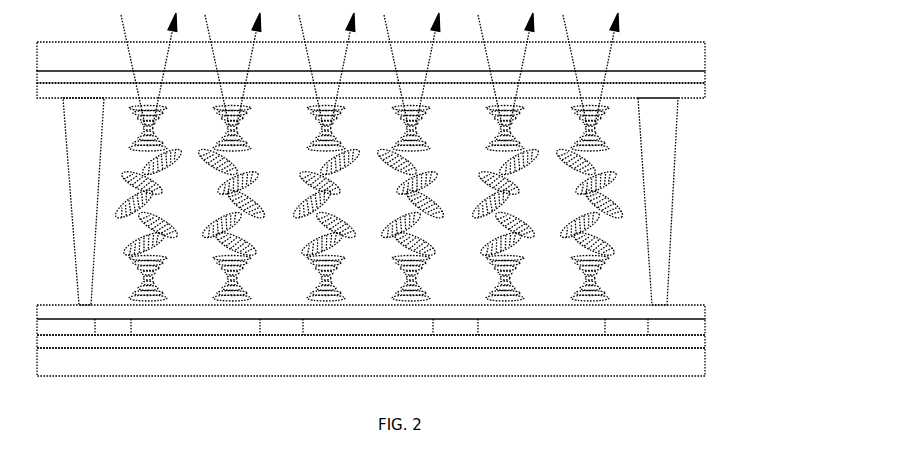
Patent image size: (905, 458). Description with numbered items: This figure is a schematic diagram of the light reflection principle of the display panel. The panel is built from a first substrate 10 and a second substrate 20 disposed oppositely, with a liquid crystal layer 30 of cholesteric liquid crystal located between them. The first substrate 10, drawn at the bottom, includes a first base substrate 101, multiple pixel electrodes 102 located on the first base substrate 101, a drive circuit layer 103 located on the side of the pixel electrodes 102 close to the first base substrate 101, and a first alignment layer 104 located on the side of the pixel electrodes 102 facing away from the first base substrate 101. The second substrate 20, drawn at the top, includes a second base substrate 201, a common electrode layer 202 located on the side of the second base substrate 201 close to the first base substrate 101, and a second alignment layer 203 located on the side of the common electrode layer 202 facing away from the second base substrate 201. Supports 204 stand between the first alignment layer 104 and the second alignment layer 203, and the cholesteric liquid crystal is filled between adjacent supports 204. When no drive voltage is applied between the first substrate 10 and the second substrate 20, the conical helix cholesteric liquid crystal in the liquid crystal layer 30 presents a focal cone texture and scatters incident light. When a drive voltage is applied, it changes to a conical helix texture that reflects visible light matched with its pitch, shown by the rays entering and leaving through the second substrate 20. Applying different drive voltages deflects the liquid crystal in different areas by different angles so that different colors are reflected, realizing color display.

The second substrate 20 is at (429, 72).
The second base substrate 201 is at (706, 57).
The common electrode layer 202 is at (706, 77).
The second alignment layer 203 is at (706, 93).
The supports 204 is at (75, 216).
The liquid crystal layer 30 is at (735, 196).
The first substrate 10 is at (430, 340).
The first alignment layer 104 is at (706, 313).
The pixel electrodes 102 is at (706, 327).
The drive circuit layer 103 is at (706, 340).
The first base substrate 101 is at (706, 361).